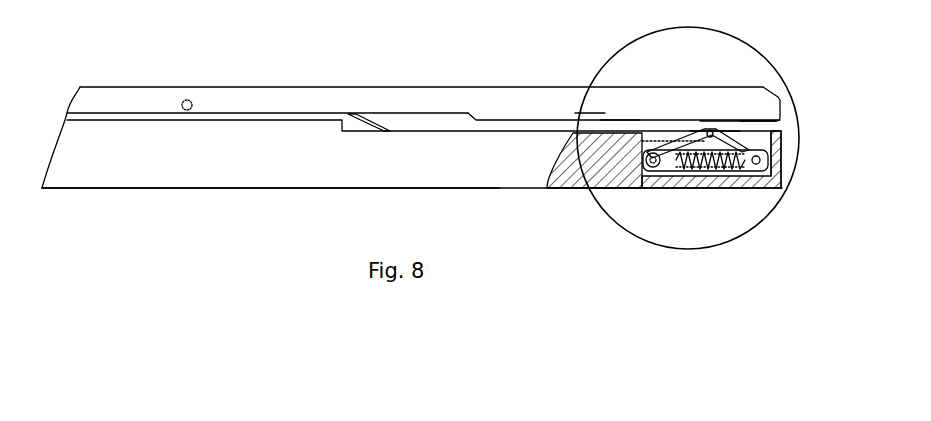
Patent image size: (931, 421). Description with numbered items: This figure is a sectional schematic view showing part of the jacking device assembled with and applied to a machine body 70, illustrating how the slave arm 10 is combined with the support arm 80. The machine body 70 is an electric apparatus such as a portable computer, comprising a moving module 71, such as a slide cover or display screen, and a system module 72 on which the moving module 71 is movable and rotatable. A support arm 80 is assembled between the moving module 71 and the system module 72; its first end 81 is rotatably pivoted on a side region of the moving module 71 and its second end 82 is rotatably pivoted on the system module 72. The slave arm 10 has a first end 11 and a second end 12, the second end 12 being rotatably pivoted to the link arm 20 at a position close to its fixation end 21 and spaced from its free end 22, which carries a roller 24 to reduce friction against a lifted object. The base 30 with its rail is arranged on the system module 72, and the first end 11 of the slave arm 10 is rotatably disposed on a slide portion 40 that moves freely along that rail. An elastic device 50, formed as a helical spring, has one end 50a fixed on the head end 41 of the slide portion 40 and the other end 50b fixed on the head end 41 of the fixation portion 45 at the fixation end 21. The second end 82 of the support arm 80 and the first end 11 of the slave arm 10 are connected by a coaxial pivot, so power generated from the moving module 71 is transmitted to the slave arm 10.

The slave arm 10 is at (700, 145).
The first end 11 is at (592, 190).
The second end 12 is at (755, 110).
The link arm 20 is at (690, 117).
The fixation end 21 is at (783, 148).
The free end 22 is at (613, 123).
The roller 24 is at (582, 115).
The base 30 is at (711, 185).
The slide portion 40 is at (640, 190).
The head end 41 is at (690, 193).
The fixation portion 45 is at (783, 180).
The elastic device 50 is at (722, 193).
The end of elastic device 50a is at (683, 193).
The end of elastic device 50b is at (770, 190).
The machine body 70 is at (122, 72).
The moving module 71 is at (163, 90).
The system module 72 is at (203, 183).
The support arm 80 is at (498, 118).
The first end 81 is at (218, 120).
The second end 82 is at (652, 143).